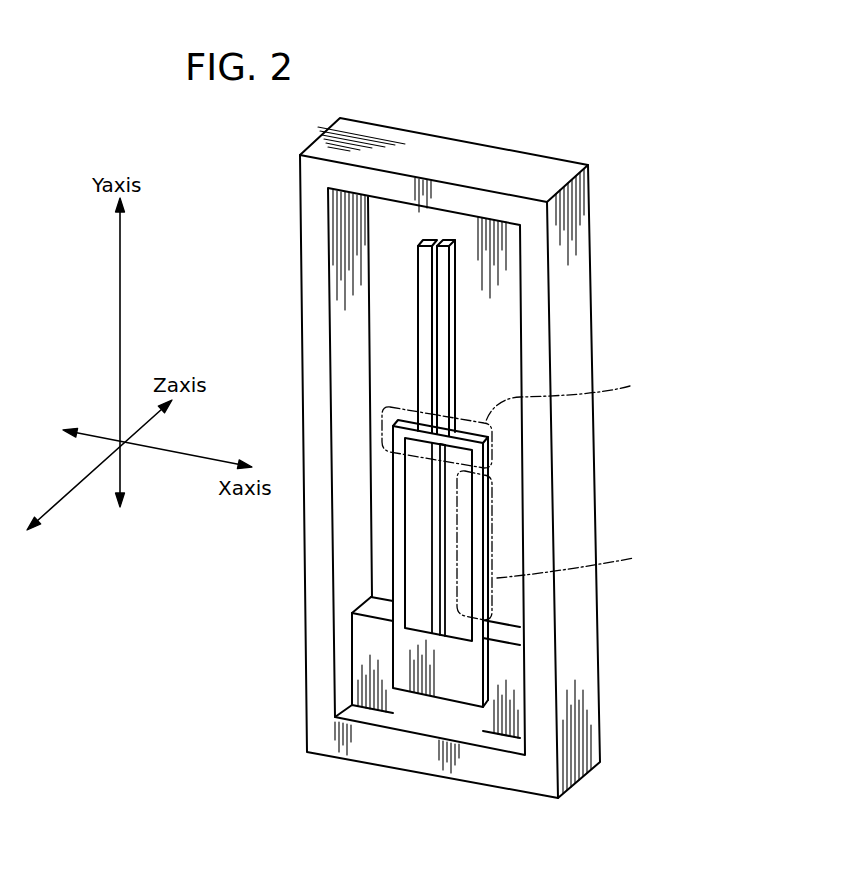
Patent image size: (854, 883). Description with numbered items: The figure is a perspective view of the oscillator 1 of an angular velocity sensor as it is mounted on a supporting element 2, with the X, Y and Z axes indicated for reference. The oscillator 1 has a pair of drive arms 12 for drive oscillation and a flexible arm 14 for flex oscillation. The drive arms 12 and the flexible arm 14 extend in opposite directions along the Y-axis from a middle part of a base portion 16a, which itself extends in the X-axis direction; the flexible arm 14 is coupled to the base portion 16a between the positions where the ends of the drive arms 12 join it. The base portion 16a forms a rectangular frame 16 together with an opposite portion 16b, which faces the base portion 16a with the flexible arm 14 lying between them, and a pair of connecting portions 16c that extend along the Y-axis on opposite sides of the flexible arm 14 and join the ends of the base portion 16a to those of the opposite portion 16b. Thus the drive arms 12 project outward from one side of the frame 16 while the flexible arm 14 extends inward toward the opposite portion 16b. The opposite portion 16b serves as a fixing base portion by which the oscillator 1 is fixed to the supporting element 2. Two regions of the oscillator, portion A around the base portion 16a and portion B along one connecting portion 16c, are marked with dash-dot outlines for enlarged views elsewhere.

The oscillator 1 is at (451, 399).
The supporting element 2 is at (571, 336).
The drive arms 12 is at (443, 300).
The flexible arm 14 is at (433, 533).
The frame 16 is at (453, 557).
The base portion 16a is at (455, 444).
The opposite portion 16b is at (462, 672).
The connecting portions 16c is at (397, 478).
The portion A is at (515, 420).
The portion B is at (553, 545).